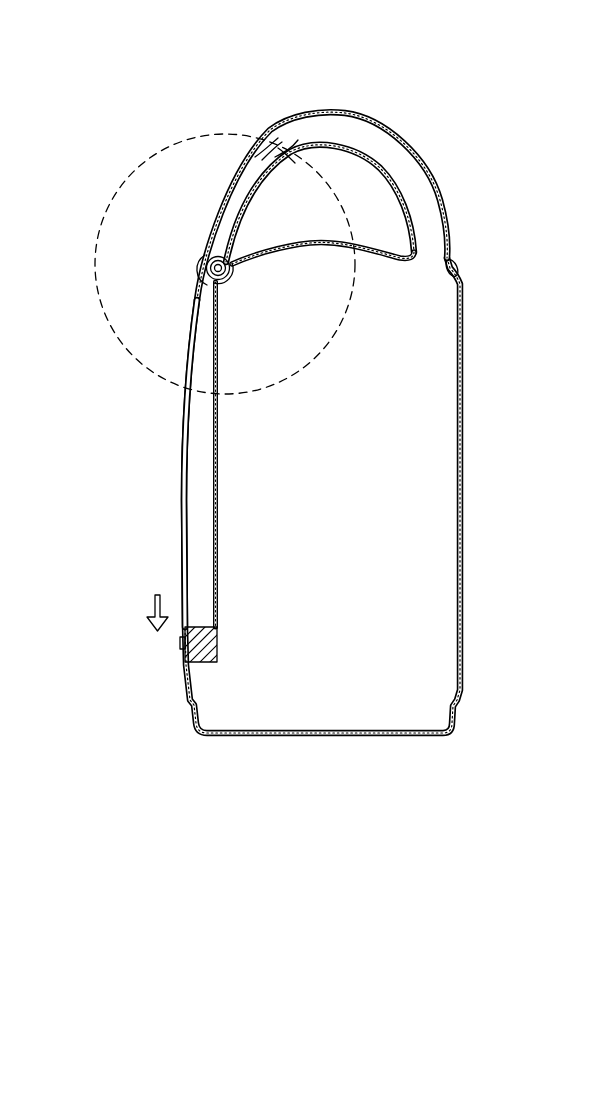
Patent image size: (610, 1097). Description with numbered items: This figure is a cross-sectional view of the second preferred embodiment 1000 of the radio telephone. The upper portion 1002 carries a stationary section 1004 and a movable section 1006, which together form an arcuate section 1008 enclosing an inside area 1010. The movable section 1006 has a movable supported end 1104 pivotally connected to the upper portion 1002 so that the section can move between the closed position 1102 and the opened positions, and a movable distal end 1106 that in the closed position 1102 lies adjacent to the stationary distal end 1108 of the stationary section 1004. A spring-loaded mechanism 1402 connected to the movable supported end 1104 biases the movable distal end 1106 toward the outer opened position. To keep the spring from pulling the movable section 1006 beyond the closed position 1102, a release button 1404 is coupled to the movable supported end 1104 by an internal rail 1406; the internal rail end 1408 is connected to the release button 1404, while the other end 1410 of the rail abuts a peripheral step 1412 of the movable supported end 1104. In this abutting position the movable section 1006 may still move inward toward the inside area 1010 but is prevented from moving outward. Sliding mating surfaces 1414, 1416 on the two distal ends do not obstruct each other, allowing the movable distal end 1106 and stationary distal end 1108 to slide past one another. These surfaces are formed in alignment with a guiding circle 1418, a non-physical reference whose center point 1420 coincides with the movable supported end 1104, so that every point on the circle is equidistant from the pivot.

The second preferred embodiment 1000 is at (116, 172).
The upper portion 1002 is at (481, 217).
The stationary section 1004 is at (377, 121).
The movable section 1006 is at (206, 225).
The arcuate section 1008 is at (469, 167).
The inside area 1010 is at (402, 234).
The closed position 1102 is at (181, 129).
The movable supported end 1104 is at (175, 261).
The movable distal end 1106 is at (278, 148).
The stationary distal end 1108 is at (278, 138).
The spring-loaded mechanism 1402 is at (228, 268).
The release button 1404 is at (180, 637).
The internal rail 1406 is at (215, 518).
The internal rail end 1408 is at (218, 598).
The other end of the internal rail 1410 is at (217, 287).
The peripheral step 1412 is at (204, 287).
The sliding mating surface 1414 is at (268, 148).
The sliding mating surface 1416 is at (270, 162).
The guiding circle 1418 is at (285, 380).
The center point 1420 is at (212, 265).